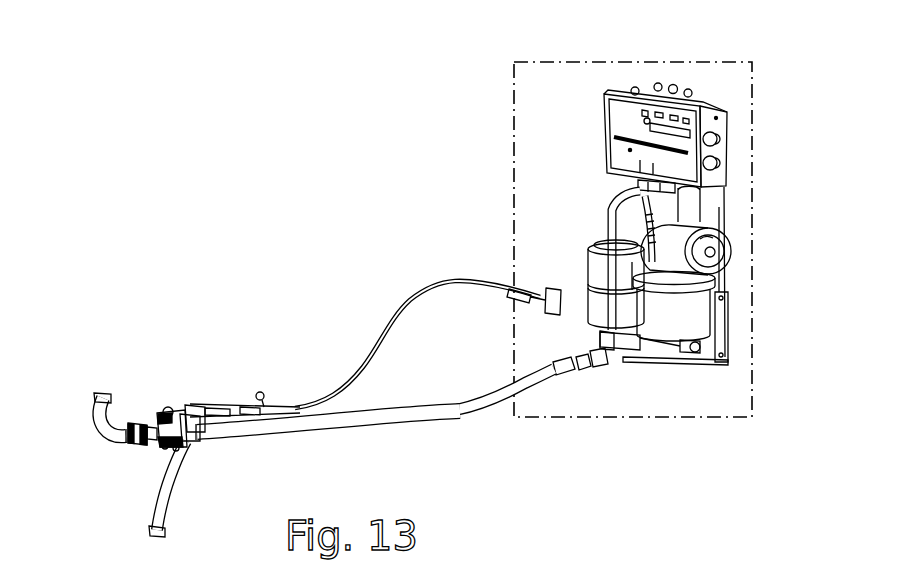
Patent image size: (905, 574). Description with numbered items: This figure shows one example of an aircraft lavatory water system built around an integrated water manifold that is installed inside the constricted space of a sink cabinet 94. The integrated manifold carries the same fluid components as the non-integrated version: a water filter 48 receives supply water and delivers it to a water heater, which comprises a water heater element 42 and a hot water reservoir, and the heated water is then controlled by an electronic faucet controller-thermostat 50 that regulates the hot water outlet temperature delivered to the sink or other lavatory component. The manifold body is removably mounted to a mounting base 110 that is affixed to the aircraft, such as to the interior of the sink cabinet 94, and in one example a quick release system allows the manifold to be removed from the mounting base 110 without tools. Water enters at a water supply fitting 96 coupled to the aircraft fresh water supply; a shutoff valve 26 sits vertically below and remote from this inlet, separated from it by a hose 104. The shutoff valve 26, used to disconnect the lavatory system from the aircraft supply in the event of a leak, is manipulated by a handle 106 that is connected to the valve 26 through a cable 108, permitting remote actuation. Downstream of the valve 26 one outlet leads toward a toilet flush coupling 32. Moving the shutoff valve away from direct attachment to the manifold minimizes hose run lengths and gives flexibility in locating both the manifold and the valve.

The sink cabinet 94 is at (727, 117).
The electronic faucet controller-thermostat 50 is at (607, 124).
The water filter 48 is at (588, 255).
The water heater element 42 is at (731, 249).
The mounting base 110 is at (724, 213).
The water supply fitting 96 is at (150, 512).
The hose 104 is at (475, 407).
The handle 106 is at (505, 379).
The cable 108 is at (377, 343).
The shutoff valve 26 is at (167, 413).
The toilet flush coupling 32 is at (97, 402).